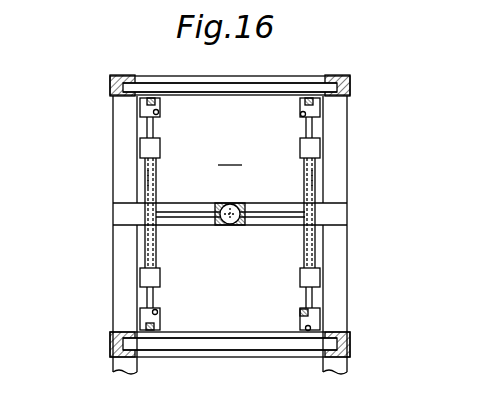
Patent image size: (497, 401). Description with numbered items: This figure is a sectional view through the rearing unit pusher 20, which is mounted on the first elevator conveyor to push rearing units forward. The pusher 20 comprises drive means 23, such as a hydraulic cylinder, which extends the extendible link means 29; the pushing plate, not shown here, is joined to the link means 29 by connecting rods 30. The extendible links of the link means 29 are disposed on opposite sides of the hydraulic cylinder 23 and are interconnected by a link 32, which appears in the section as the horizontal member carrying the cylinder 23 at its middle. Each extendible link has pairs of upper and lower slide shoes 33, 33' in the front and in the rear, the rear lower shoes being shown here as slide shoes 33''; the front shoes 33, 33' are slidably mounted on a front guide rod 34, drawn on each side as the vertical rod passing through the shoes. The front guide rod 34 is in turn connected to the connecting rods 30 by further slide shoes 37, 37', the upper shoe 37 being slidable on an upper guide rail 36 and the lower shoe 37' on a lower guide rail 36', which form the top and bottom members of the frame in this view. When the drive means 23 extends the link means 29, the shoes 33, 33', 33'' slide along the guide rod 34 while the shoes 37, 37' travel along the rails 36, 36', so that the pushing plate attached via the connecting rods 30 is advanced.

The rearing unit pusher 20 is at (232, 154).
The drive means 23 is at (232, 226).
The extendible link means 29 is at (150, 178).
The connecting rods 30 is at (158, 112).
The link 32 is at (188, 222).
The upper slide shoe 33 is at (230, 160).
The lower slide shoe 33' is at (176, 274).
The lower guide block 33'' is at (292, 286).
The front guide rod 34 is at (150, 130).
The upper guide rail 36 is at (230, 98).
The lower guide rail 36' is at (230, 350).
The slide shoe 37 is at (231, 96).
The slide shoe 37' is at (233, 315).